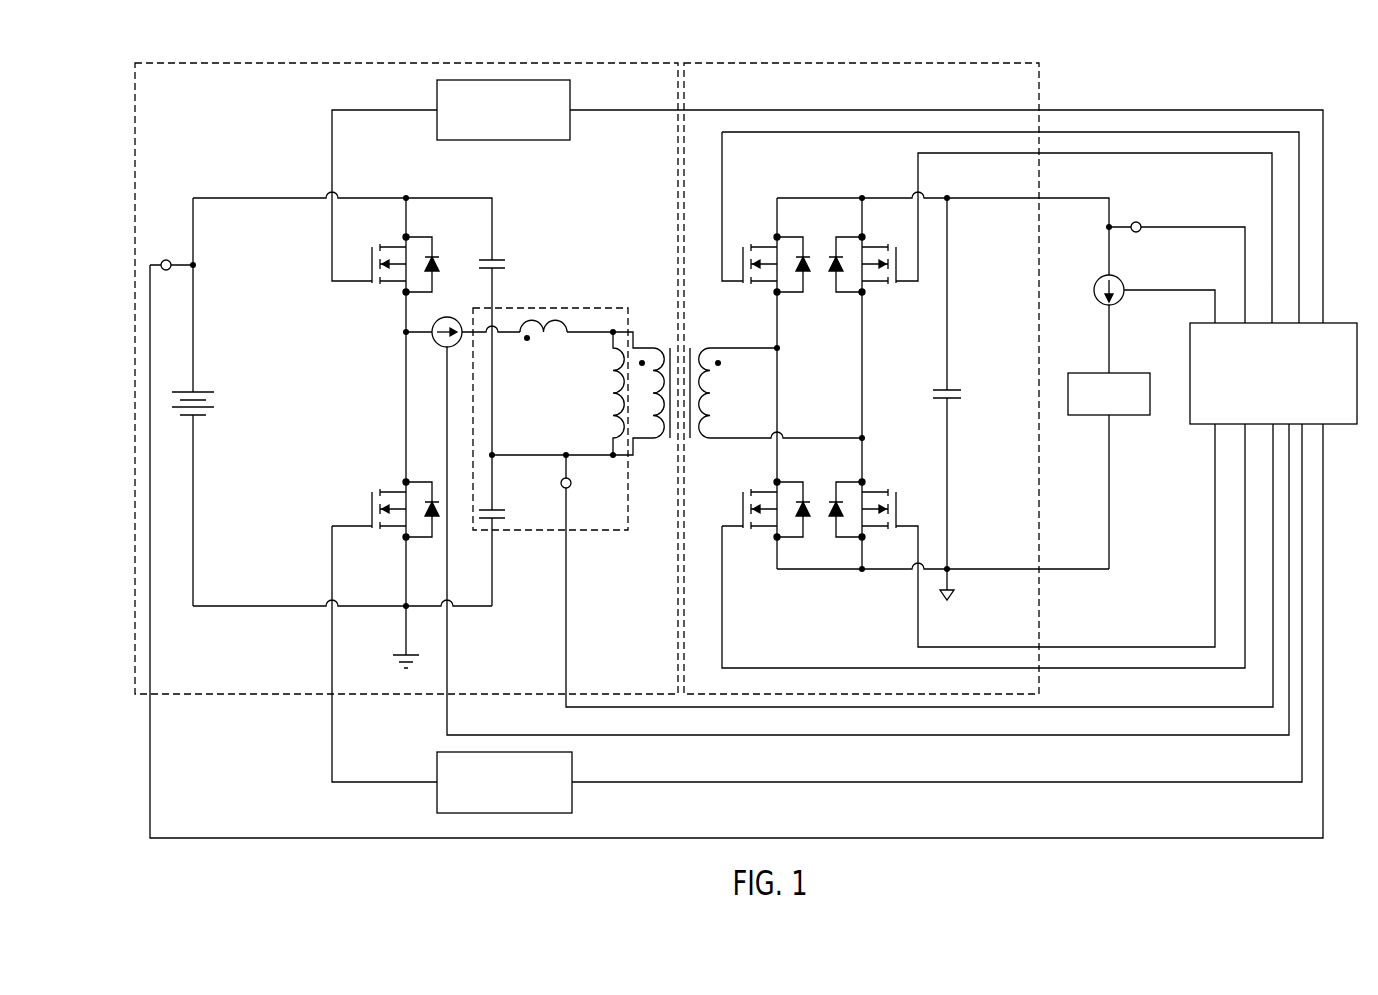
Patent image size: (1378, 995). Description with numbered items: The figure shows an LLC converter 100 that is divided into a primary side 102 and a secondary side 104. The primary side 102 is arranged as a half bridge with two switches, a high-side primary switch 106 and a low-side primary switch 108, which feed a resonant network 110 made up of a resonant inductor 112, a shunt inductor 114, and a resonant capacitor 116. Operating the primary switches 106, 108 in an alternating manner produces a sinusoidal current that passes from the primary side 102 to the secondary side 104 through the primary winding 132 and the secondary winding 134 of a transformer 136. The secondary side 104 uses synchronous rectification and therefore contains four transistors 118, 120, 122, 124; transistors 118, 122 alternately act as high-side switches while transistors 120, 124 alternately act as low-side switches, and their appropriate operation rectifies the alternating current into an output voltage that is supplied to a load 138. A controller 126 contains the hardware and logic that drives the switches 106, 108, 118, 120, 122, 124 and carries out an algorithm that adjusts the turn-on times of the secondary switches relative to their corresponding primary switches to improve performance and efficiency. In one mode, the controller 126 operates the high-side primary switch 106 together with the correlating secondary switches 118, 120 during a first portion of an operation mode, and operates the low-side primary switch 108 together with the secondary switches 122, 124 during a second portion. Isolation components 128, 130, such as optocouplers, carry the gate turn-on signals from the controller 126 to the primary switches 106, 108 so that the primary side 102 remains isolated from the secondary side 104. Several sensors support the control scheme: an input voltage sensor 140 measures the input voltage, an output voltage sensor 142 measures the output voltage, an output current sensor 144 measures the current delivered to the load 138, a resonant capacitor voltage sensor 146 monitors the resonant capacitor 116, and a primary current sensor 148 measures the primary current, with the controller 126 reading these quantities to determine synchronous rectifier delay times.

The LLC converter 100 is at (233, 24).
The primary side 102 is at (134, 178).
The secondary side 104 is at (1039, 85).
The high-side primary switch 106 is at (397, 283).
The low-side primary switch 108 is at (397, 492).
The resonant network 110 is at (603, 308).
The resonant inductor 112 is at (566, 330).
The shunt inductor 114 is at (620, 380).
The resonant capacitor 116 is at (497, 518).
The secondary side switch 118 is at (762, 245).
The secondary side switch 120 is at (875, 528).
The secondary side switch 122 is at (877, 245).
The secondary side switch 124 is at (757, 528).
The controller 126 is at (1190, 360).
The isolation component 128 is at (525, 140).
The isolation component 130 is at (572, 773).
The primary winding 132 is at (656, 346).
The secondary winding 134 is at (710, 346).
The transformer 136 is at (749, 388).
The load 138 is at (1090, 372).
The input voltage sensor 140 is at (164, 260).
The output voltage sensor 142 is at (1137, 221).
The output current sensor 144 is at (1117, 284).
The resonant capacitor voltage sensor 146 is at (561, 483).
The primary current sensor 148 is at (449, 317).